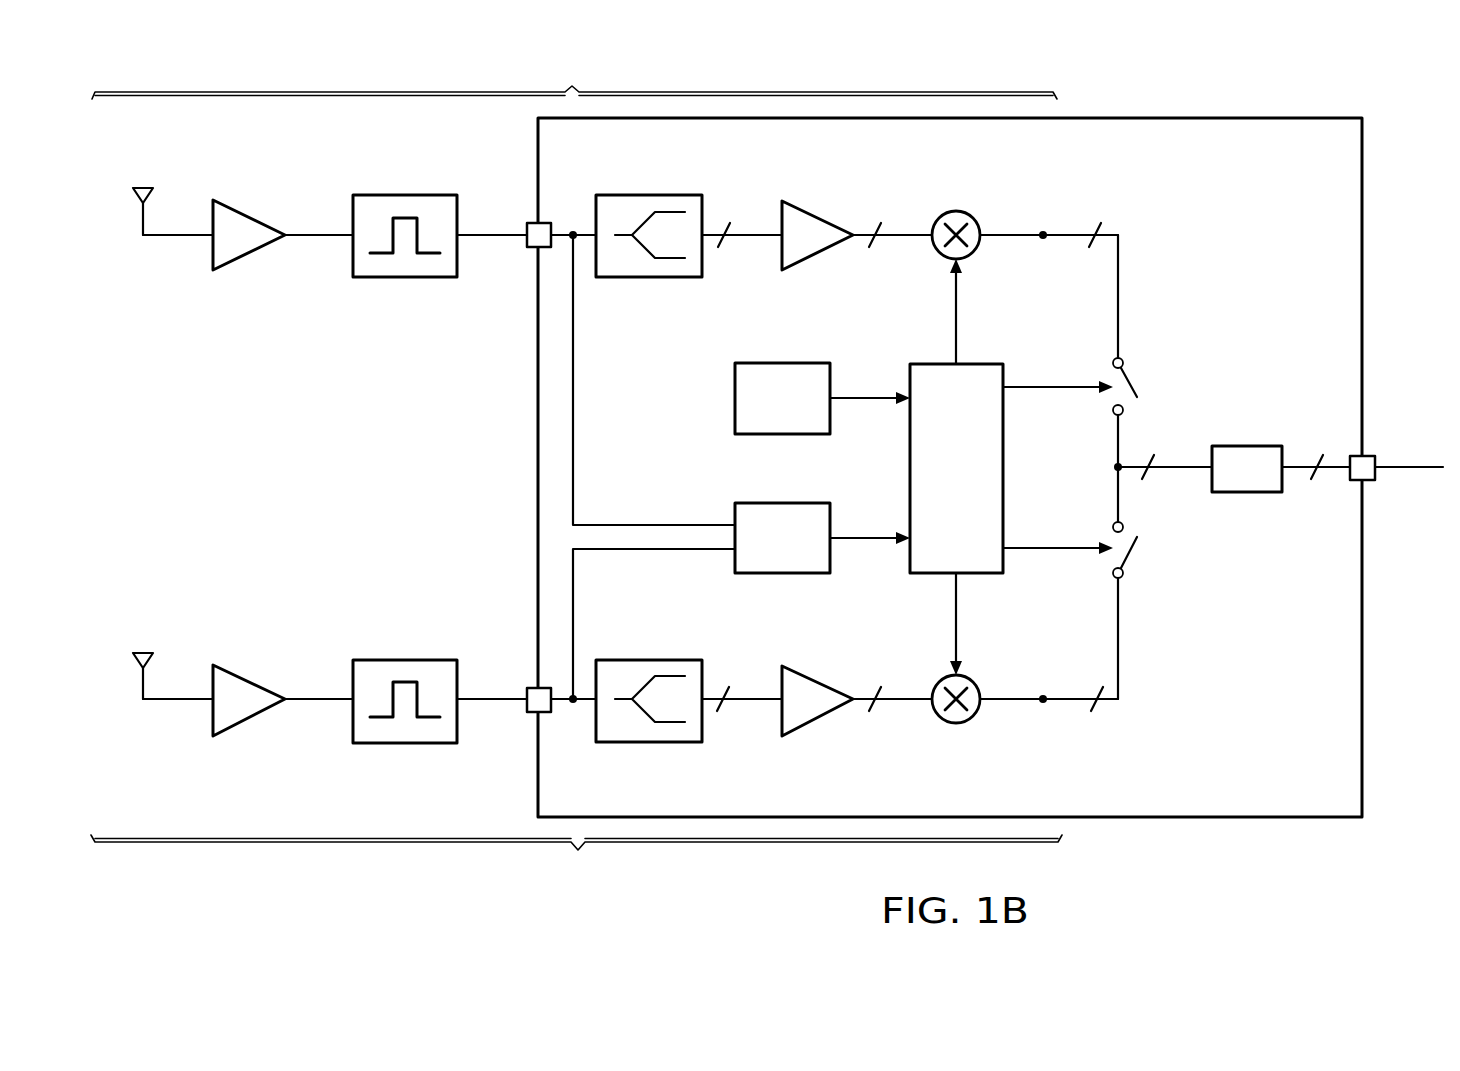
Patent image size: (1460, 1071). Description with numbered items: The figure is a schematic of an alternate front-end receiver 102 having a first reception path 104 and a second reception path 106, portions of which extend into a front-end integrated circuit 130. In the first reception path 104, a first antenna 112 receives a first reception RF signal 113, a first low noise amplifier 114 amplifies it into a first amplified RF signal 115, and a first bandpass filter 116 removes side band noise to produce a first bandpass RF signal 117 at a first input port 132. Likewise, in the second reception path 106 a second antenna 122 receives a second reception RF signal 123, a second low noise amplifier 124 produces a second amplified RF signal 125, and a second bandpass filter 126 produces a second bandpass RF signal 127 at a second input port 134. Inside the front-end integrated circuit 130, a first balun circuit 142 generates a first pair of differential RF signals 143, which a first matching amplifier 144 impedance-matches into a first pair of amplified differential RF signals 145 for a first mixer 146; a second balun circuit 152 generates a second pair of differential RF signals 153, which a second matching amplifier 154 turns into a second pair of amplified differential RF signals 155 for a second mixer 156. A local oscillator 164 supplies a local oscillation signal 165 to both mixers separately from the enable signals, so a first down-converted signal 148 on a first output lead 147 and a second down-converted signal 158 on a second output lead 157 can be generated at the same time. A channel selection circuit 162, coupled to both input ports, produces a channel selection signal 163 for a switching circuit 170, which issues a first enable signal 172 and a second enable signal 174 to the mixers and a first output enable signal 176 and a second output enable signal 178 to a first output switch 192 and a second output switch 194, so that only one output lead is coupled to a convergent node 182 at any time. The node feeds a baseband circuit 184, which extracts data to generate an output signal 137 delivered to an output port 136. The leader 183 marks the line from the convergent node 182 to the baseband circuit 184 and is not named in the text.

The front-end receiver 102 is at (1192, 60).
The first reception path 104 is at (574, 76).
The second reception path 106 is at (576, 860).
The first antenna 112 is at (138, 185).
The first reception RF signal 113 is at (178, 235).
The first low noise amplifier 114 is at (247, 217).
The first amplified RF signal 115 is at (317, 235).
The first bandpass filter 116 is at (403, 195).
The first bandpass RF signal 117 is at (503, 235).
The second antenna 122 is at (138, 650).
The second reception RF signal 123 is at (178, 699).
The second low noise amplifier 124 is at (250, 722).
The second amplified RF signal 125 is at (318, 699).
The second bandpass filter 126 is at (405, 743).
The second bandpass RF signal 127 is at (503, 699).
The front-end integrated circuit 130 is at (1264, 218).
The first input port 132 is at (527, 220).
The second input port 134 is at (527, 714).
The output port 136 is at (1370, 456).
The output signal 137 is at (1408, 467).
The first balun circuit 142 is at (642, 195).
The first pair of differential RF signals 143 is at (745, 235).
The first matching amplifier 144 is at (825, 217).
The first pair of amplified differential RF signals 145 is at (898, 235).
The first mixer 146 is at (965, 218).
The first output lead 147 is at (1015, 235).
The first down-converted signal 148 is at (1073, 235).
The second balun circuit 152 is at (648, 742).
The second pair of differential RF signals 153 is at (745, 699).
The second matching amplifier 154 is at (818, 722).
The second pair of amplified differential RF signals 155 is at (897, 699).
The second mixer 156 is at (966, 723).
The second output lead 157 is at (1013, 699).
The second down-converted signal 158 is at (1072, 699).
The channel selection circuit 162 is at (782, 573).
The channel selection signal 163 is at (857, 538).
The local oscillator 164 is at (780, 363).
The local oscillation signal 165 is at (857, 398).
The switching circuit 170 is at (979, 482).
The first enable signal 172 is at (956, 313).
The second enable signal 174 is at (956, 617).
The first output enable signal 176 is at (1048, 387).
The second output enable signal 178 is at (1048, 548).
The convergent node 182 is at (1150, 445).
The baseband input line 183 is at (1170, 467).
The baseband circuit 184 is at (1247, 446).
The first output switch 192 is at (1133, 385).
The second output switch 194 is at (1135, 560).